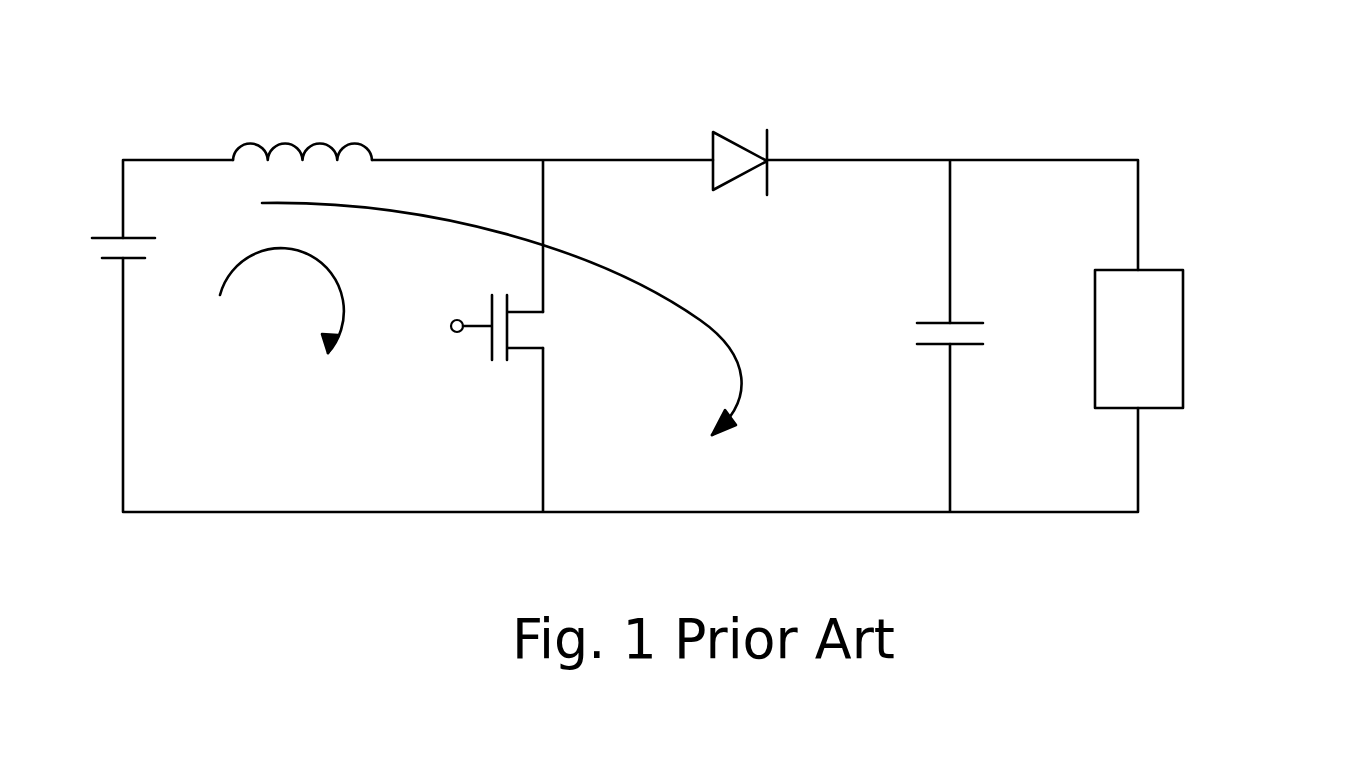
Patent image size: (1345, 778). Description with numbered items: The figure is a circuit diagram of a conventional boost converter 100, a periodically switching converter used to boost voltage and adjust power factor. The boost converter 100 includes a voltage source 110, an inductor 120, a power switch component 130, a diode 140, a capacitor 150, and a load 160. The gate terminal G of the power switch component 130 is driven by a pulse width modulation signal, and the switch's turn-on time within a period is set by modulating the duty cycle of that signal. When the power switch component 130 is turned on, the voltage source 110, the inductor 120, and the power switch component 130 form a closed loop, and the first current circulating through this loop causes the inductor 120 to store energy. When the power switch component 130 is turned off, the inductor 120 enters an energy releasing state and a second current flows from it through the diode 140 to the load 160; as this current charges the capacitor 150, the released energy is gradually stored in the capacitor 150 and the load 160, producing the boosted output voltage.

The boost converter 100 is at (1187, 137).
The voltage source 110 is at (107, 237).
The inductor 120 is at (323, 143).
The power switch component 130 is at (543, 330).
The diode 140 is at (733, 140).
The capacitor 150 is at (930, 347).
The load 160 is at (1183, 297).